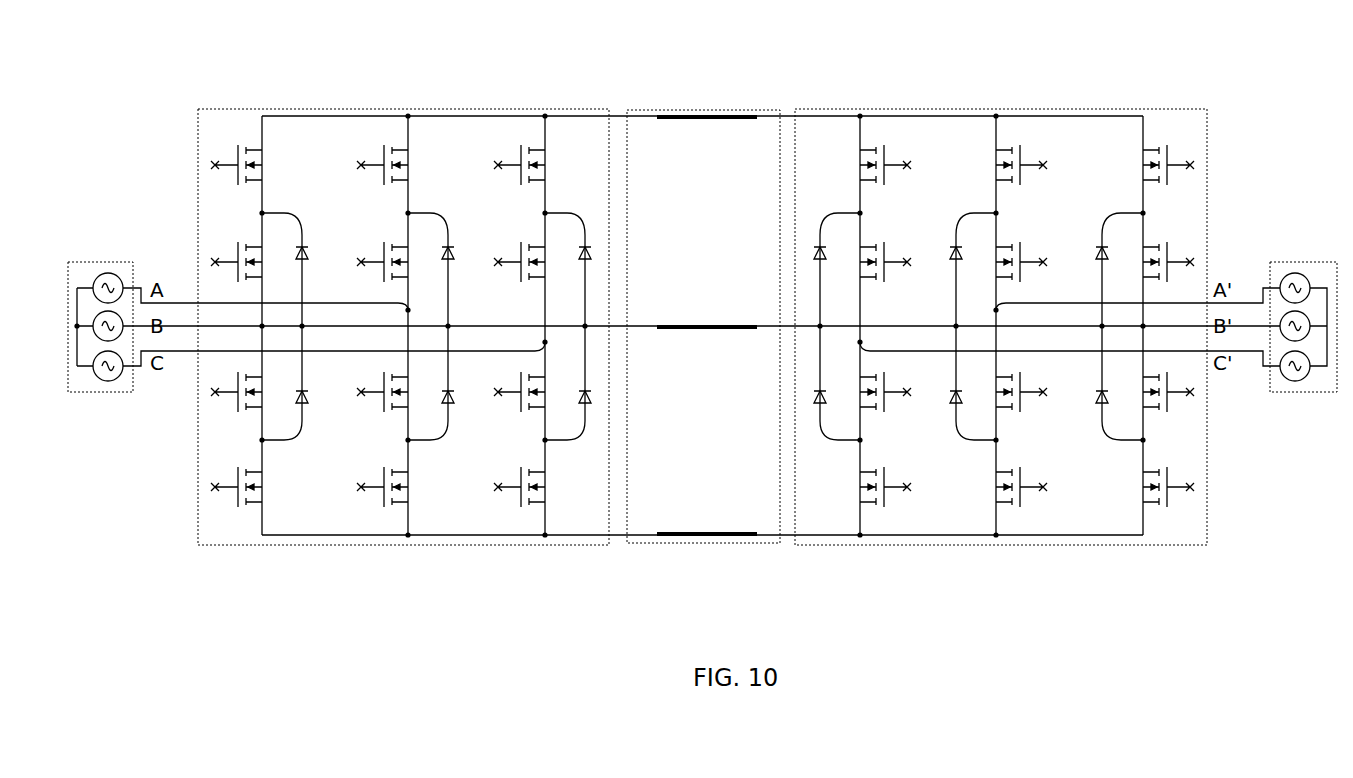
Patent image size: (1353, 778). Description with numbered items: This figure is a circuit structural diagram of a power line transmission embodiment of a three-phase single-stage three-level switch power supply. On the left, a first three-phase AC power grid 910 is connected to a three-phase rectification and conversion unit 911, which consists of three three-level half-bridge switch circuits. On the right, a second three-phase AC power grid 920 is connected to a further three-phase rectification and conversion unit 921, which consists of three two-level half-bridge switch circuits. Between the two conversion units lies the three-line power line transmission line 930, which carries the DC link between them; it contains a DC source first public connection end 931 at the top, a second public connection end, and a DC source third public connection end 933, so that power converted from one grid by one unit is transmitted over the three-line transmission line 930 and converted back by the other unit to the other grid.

The first three-phase AC power grid 910 is at (80, 260).
The three-phase rectification and conversion unit 911 is at (240, 110).
The second three-phase AC power grid 920 is at (1274, 262).
The three-phase rectification and conversion unit 921 is at (893, 110).
The three-line power line transmission line 930 is at (763, 111).
The DC source first public connection end 931 is at (680, 110).
The DC source third public connection end 933 is at (684, 322).